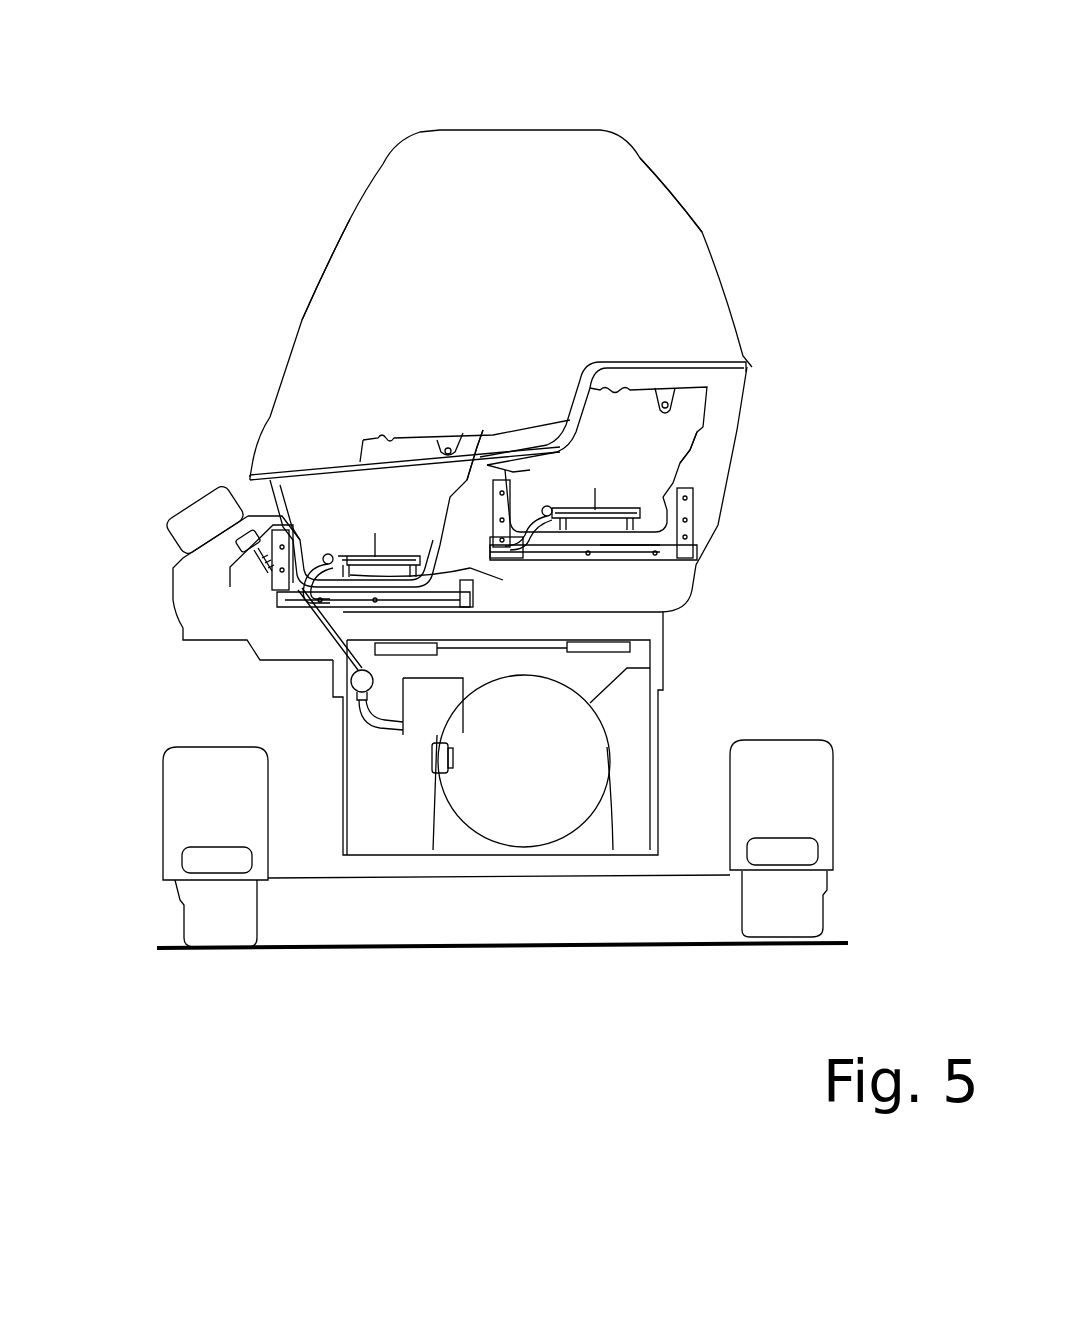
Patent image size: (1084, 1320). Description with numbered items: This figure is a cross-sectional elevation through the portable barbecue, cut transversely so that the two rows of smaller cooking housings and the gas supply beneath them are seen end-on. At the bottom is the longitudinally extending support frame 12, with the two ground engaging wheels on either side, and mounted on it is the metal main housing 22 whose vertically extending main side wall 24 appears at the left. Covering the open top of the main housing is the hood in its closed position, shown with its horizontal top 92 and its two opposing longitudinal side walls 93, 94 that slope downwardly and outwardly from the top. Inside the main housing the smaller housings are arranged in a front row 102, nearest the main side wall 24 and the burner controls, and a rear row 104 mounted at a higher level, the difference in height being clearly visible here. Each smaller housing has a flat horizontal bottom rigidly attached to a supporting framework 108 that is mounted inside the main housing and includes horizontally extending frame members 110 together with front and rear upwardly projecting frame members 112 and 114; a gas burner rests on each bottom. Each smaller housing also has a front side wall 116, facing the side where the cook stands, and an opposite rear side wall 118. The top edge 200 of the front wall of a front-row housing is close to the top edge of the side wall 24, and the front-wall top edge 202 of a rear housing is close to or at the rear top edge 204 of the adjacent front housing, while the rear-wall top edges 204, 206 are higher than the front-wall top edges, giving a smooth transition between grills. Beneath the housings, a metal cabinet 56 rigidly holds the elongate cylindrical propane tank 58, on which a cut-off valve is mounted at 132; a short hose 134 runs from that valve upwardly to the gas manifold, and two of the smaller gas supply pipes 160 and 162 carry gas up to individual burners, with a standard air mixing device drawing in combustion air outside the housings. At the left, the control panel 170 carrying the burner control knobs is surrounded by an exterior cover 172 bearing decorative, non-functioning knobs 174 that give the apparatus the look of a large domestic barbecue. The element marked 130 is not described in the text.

The support frame 12 is at (540, 877).
The main housing 22 is at (723, 508).
The main side wall 24 is at (270, 510).
The metal cabinet 56 is at (655, 743).
The cylindrical tank 58 is at (627, 668).
The top of the hood 92 is at (480, 130).
The longitudinal side wall of the hood 93 is at (350, 219).
The longitudinal side wall of the hood 94 is at (702, 232).
The front row 102 is at (320, 483).
The rear row 104 is at (687, 407).
The supporting framework 108 is at (560, 558).
The horizontally extending frame member 110 is at (638, 553).
The front upwardly projecting frame member 112 is at (490, 510).
The rear upwardly projecting frame member 114 is at (692, 502).
The front side wall 116 is at (513, 472).
The rear side wall 118 is at (700, 437).
The fan housing 130 is at (590, 827).
The cut-off valve 132 is at (427, 735).
The short hose 134 is at (363, 715).
The smaller gas supply pipe 160 is at (330, 630).
The smaller gas supply pipe 162 is at (503, 580).
The control panel 170 is at (175, 580).
The exterior cover 172 is at (175, 575).
The decorative knob 174 is at (180, 510).
The top edge of the front side wall 200 is at (262, 473).
The top edge of the front side wall 202 is at (490, 447).
The top edge of the rear side wall 204 is at (497, 450).
The top edge of the rear side wall 206 is at (709, 387).